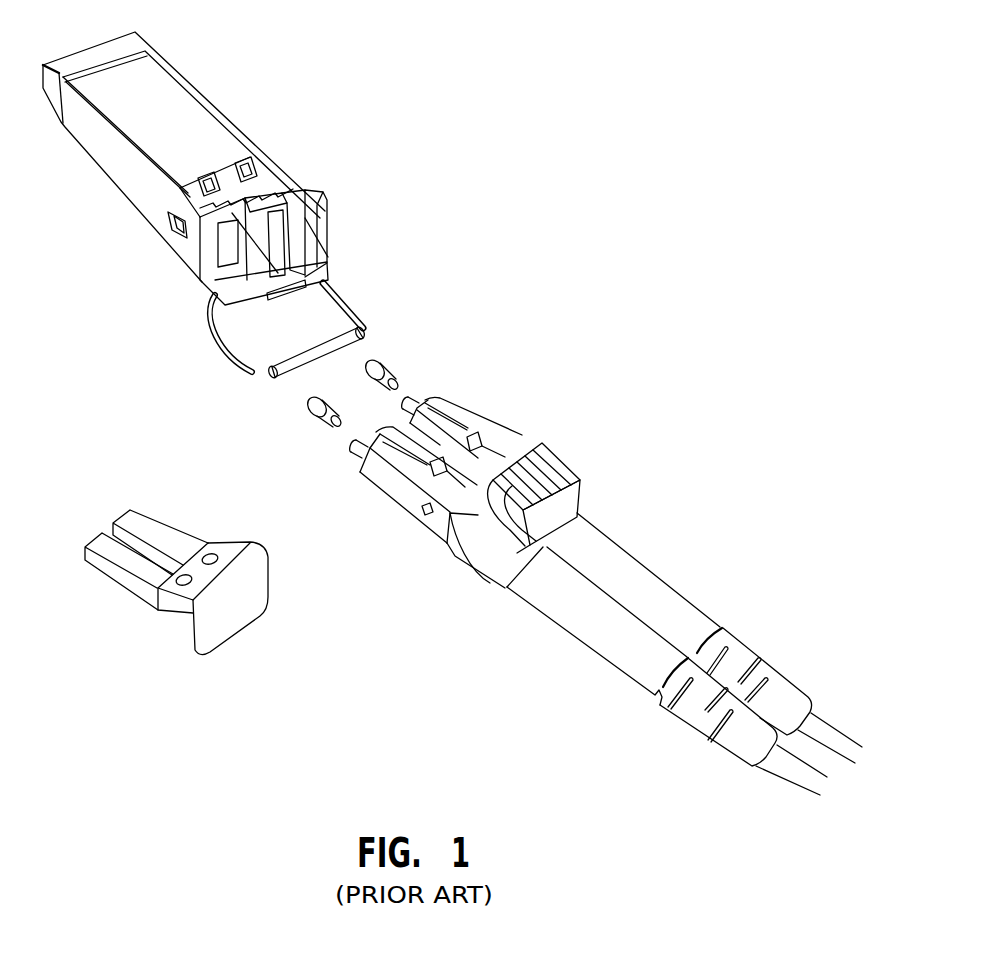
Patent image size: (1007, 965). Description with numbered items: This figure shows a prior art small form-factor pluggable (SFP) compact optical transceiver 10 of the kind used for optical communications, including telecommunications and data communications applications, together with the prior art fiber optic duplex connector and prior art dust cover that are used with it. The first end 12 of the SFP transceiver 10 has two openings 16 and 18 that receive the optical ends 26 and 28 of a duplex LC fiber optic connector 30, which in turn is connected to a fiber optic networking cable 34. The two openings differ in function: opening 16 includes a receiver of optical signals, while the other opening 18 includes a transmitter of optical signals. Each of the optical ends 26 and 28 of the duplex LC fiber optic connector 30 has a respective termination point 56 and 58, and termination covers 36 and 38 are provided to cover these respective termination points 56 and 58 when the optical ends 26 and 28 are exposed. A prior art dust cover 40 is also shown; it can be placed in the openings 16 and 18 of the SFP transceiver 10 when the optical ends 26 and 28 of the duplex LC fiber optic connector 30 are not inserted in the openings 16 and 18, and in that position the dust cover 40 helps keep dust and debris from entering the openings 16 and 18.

The SFP compact optical transceiver 10 is at (218, 108).
The first end 12 is at (328, 202).
The opening 16 is at (248, 278).
The opening 18 is at (300, 256).
The optical end 26 is at (358, 473).
The optical end 28 is at (448, 405).
The duplex LC fiber optic connector 30 is at (523, 440).
The fiber optic networking cable 34 is at (818, 713).
The termination cover 36 is at (306, 408).
The termination cover 38 is at (393, 362).
The dust cover 40 is at (177, 529).
The termination point 56 is at (346, 445).
The termination point 58 is at (415, 398).